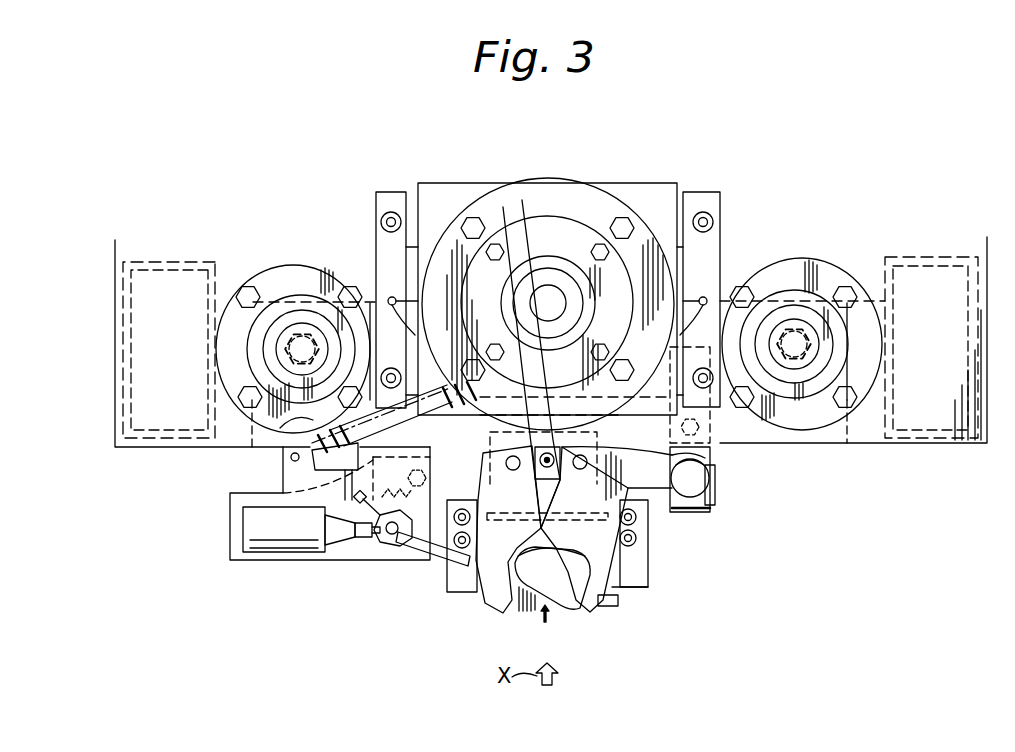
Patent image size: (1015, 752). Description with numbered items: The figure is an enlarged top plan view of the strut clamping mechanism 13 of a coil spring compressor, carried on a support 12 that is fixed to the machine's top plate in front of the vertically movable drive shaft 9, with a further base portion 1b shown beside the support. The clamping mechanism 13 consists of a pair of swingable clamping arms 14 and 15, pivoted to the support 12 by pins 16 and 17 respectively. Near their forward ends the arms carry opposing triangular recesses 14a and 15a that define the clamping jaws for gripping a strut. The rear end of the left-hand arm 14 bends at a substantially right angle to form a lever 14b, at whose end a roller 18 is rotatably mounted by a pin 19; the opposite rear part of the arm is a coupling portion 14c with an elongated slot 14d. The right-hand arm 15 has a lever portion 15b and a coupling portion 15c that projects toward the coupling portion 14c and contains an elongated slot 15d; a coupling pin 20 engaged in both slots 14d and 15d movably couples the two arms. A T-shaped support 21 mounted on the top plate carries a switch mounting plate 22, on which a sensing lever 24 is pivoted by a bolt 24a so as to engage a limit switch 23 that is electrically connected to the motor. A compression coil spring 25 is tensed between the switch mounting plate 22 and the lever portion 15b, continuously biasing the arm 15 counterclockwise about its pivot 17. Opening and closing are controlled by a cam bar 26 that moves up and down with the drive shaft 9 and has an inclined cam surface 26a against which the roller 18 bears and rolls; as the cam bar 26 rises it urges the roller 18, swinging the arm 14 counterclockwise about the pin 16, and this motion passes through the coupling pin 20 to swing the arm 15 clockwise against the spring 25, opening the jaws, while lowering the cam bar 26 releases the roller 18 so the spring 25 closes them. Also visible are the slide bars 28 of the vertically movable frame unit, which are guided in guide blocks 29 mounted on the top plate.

The support block 1b is at (452, 592).
The drive shaft 9 is at (549, 300).
The support 12 is at (618, 548).
The clamping mechanism 13 is at (546, 622).
The clamping arm 14 is at (604, 575).
The triangular recess 14a is at (565, 583).
The lever 14b is at (650, 490).
The coupling portion 14c is at (582, 452).
The elongated slot 14d is at (712, 462).
The clamping arm 15 is at (494, 603).
The triangular recess 15a is at (530, 612).
The lever portion 15b is at (512, 204).
The coupling portion 15c is at (490, 434).
The elongated slot 15d is at (492, 458).
The pin 16 is at (650, 498).
The pin 17 is at (508, 468).
The roller 18 is at (705, 512).
The pin 19 is at (713, 482).
The coupling pin 20 is at (547, 452).
The T-shaped support 21 is at (283, 481).
The switch mounting plate 22 is at (335, 555).
The limit switch 23 is at (258, 548).
The sensing lever 24 is at (435, 560).
The bolt 24a is at (385, 540).
The compression coil spring 25 is at (300, 425).
The cam bar 26 is at (692, 512).
The cam surface 26a is at (710, 505).
The slide bars 28 is at (300, 330).
The guide blocks 29 is at (246, 345).